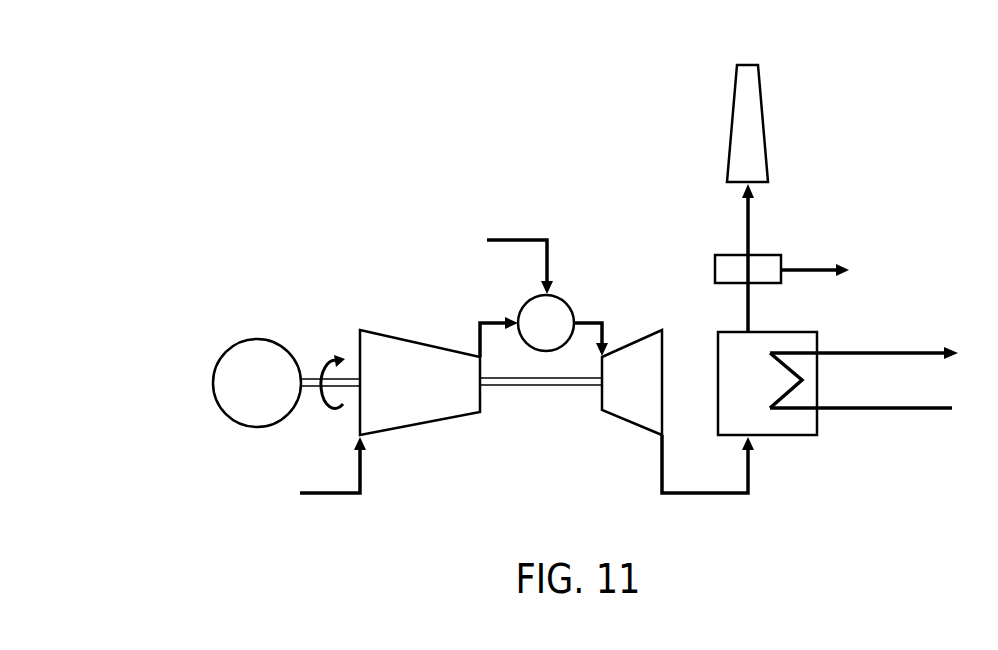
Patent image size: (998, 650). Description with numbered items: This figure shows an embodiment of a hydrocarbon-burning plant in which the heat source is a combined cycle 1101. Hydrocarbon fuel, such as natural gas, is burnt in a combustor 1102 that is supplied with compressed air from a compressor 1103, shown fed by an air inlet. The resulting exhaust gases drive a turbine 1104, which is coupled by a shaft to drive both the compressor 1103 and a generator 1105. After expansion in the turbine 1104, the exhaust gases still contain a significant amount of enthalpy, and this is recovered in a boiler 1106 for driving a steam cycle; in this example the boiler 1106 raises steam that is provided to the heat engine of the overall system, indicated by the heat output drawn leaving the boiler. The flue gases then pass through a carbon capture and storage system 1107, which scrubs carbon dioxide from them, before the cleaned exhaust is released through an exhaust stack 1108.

The combined cycle 1101 is at (382, 104).
The combustor 1102 is at (562, 311).
The compressor 1103 is at (369, 356).
The turbine 1104 is at (633, 412).
The generator 1105 is at (226, 362).
The boiler 1106 is at (785, 427).
The carbon capture and storage system 1107 is at (728, 255).
The exhaust stack 1108 is at (742, 103).